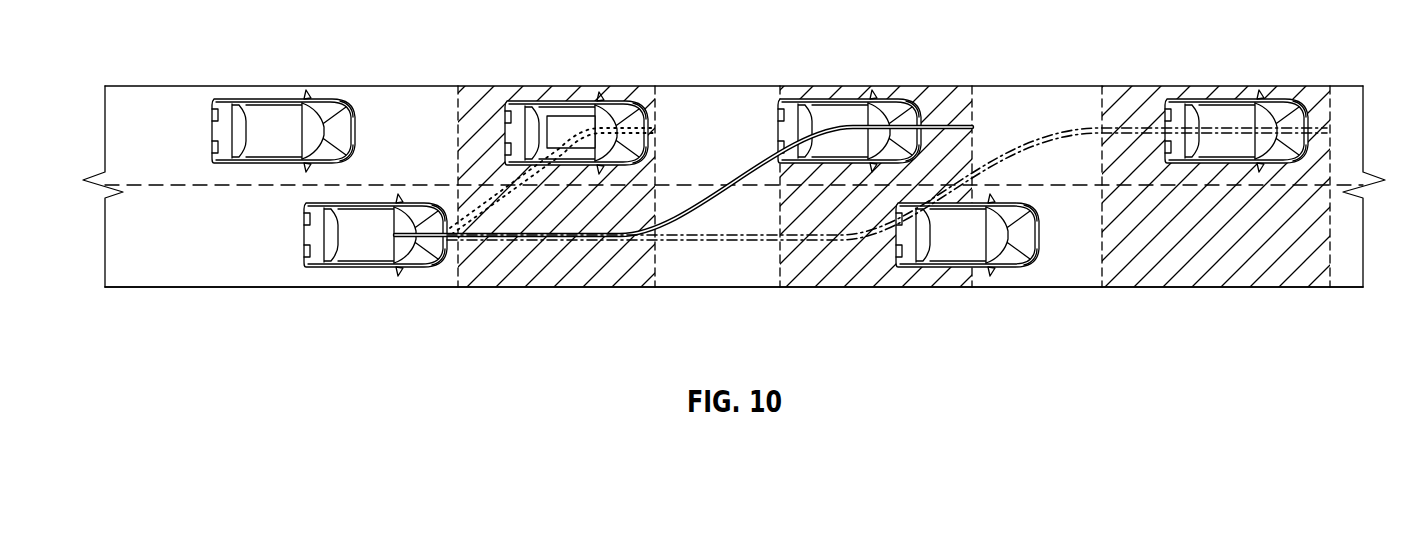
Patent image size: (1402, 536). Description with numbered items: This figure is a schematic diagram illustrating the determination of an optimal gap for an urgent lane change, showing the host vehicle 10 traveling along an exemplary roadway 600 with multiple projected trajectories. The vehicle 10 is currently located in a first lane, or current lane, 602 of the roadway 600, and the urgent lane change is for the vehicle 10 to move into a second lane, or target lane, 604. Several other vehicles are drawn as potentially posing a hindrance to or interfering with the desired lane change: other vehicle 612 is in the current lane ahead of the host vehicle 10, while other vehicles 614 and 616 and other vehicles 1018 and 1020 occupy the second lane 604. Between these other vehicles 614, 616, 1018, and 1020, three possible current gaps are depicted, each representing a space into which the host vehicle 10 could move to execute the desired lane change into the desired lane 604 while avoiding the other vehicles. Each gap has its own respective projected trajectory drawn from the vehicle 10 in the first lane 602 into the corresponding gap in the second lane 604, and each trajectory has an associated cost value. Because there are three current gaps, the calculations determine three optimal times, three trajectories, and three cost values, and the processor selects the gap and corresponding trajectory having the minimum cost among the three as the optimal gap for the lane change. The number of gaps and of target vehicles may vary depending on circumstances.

The roadway 600 is at (166, 44).
The first lane 602 is at (196, 278).
The second lane 604 is at (196, 172).
The vehicle 10 is at (328, 269).
The other vehicle 612 is at (1013, 268).
The other vehicle 614 is at (268, 100).
The other vehicle 616 is at (562, 97).
The other vehicle 1018 is at (850, 99).
The other vehicle 1020 is at (1237, 98).